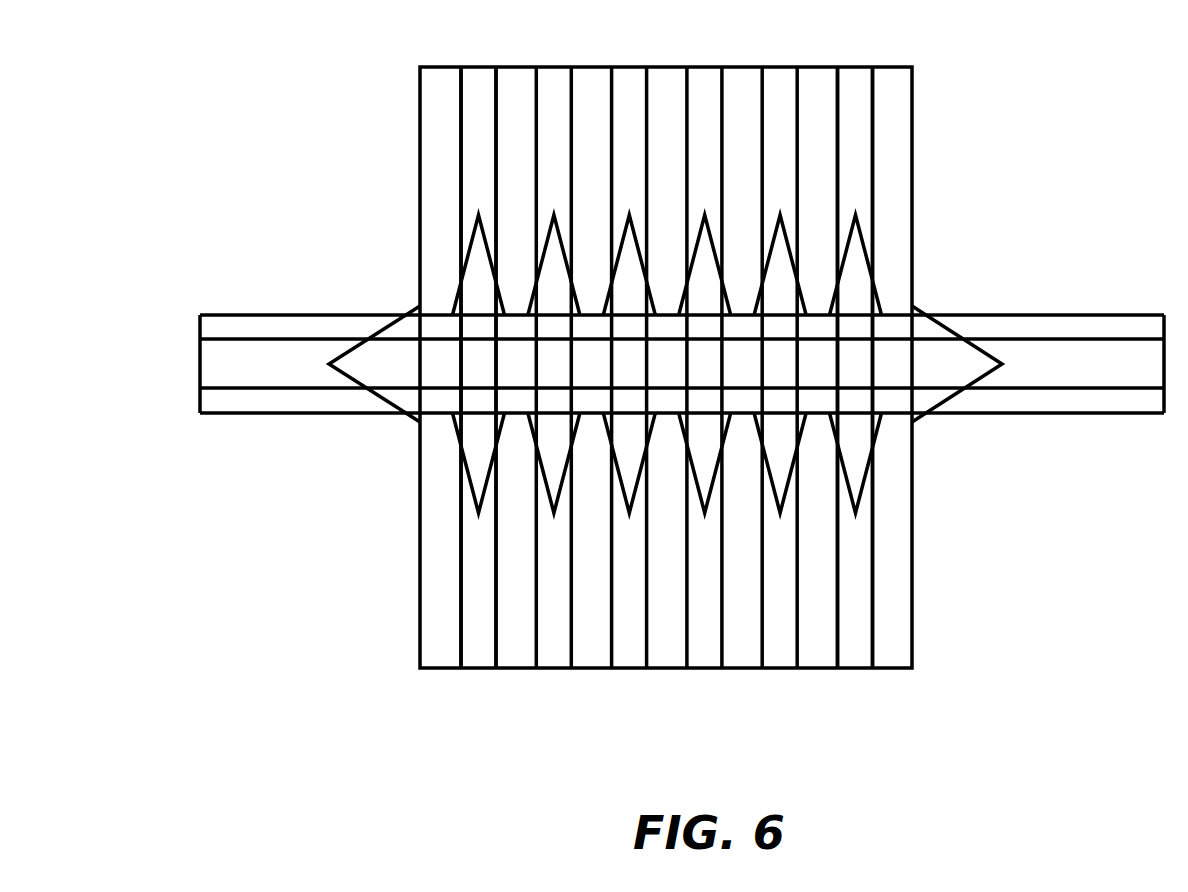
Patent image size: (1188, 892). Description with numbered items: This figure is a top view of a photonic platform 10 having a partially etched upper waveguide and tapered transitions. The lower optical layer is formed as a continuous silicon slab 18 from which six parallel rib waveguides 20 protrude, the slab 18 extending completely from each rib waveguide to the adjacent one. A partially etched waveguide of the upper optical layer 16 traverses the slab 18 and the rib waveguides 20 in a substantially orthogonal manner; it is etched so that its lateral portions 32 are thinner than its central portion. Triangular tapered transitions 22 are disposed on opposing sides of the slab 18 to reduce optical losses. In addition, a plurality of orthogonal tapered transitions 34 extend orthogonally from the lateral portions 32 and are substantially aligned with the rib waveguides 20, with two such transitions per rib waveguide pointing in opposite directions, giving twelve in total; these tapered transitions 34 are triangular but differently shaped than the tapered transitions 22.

The photonic platform 10 is at (1063, 105).
The upper optical layer 16 is at (213, 370).
The silicon slab 18 is at (432, 100).
The rib waveguides 20 is at (477, 75).
The triangular tapered transitions 22 is at (360, 370).
The lateral portions 32 is at (213, 323).
The orthogonal tapered transitions 34 is at (475, 240).